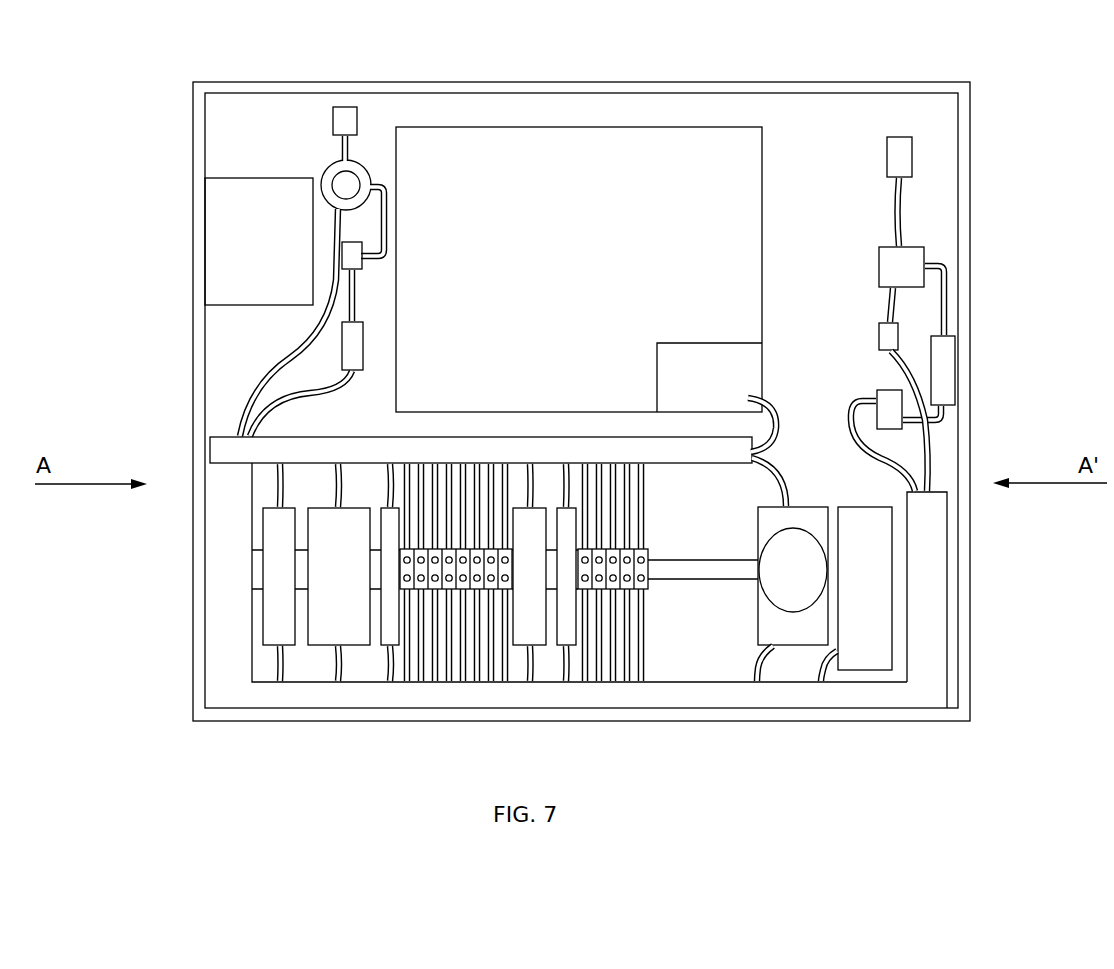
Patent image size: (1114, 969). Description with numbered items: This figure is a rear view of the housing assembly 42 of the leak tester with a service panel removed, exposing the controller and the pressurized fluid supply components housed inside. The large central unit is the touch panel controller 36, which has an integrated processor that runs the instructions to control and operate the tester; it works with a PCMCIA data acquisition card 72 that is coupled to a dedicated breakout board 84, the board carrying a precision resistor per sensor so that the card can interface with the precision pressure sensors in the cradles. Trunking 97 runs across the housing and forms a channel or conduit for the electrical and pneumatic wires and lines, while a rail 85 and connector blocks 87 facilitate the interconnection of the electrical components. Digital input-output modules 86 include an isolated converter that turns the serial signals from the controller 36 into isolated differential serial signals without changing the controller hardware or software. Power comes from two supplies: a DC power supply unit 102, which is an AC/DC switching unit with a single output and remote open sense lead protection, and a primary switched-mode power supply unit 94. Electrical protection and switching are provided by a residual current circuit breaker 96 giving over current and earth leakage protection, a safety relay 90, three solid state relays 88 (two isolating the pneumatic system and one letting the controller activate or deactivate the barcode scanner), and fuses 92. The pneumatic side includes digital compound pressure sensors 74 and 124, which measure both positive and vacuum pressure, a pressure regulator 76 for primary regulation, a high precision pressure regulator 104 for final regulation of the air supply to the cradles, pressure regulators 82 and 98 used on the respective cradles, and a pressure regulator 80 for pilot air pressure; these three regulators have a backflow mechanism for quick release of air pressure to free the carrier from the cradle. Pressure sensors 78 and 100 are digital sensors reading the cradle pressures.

The touch panel controller 36 is at (503, 140).
The housing assembly 42 is at (193, 129).
The PCMCIA data acquisition card 72 is at (698, 343).
The pressure sensor 74 is at (897, 165).
The pressure regulator 76 is at (915, 255).
The pressure sensor 78 is at (880, 338).
The pressure regulator 80 is at (945, 372).
The pressure regulator 82 is at (897, 395).
The breakout board 84 is at (867, 515).
The rail 85 is at (678, 569).
The digital input-output modules 86 is at (775, 590).
The connector blocks 87 is at (650, 587).
The solid state relays 88 is at (567, 628).
The safety relay 90 is at (528, 628).
The fuses 92 is at (392, 628).
The primary switched-mode power supply unit 94 is at (337, 628).
The residual current circuit breaker 96 is at (277, 573).
The trunking 97 is at (218, 457).
The pressure regulator 98 is at (350, 354).
The pressure sensor 100 is at (353, 256).
The DC power supply unit 102 is at (230, 246).
The pressure regulator 104 is at (332, 175).
The pressure sensor 124 is at (345, 118).